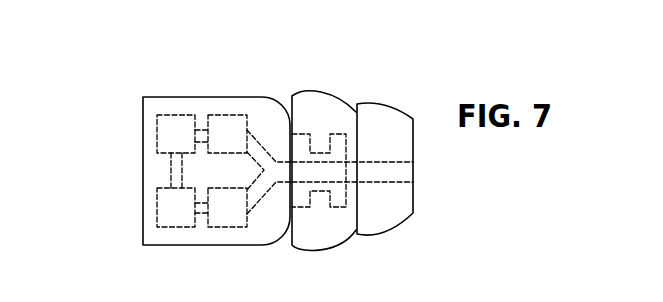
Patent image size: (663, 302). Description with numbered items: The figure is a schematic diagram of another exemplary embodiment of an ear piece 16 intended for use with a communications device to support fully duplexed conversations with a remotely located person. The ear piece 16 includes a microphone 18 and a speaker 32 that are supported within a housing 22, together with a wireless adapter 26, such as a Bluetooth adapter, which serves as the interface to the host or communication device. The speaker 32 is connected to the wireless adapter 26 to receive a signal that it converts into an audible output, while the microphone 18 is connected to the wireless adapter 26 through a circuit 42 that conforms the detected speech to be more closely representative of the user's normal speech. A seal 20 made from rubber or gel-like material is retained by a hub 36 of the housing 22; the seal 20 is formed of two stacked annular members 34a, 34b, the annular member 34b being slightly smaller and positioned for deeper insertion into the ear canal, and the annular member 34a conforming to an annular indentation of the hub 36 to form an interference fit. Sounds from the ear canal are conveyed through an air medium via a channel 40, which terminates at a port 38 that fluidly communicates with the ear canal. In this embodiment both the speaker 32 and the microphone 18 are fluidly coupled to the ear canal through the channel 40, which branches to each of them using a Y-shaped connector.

The ear piece 16 is at (121, 78).
The microphone 18 is at (229, 123).
The seal 20 is at (342, 113).
The housing 22 is at (265, 128).
The wireless adapter 26 is at (177, 217).
The speaker 32 is at (228, 217).
The annular member 34a is at (312, 105).
The annular member 34b is at (388, 110).
The hub 36 is at (333, 215).
The port 38 is at (413, 172).
The channel 40 is at (287, 171).
The circuit 42 is at (177, 123).